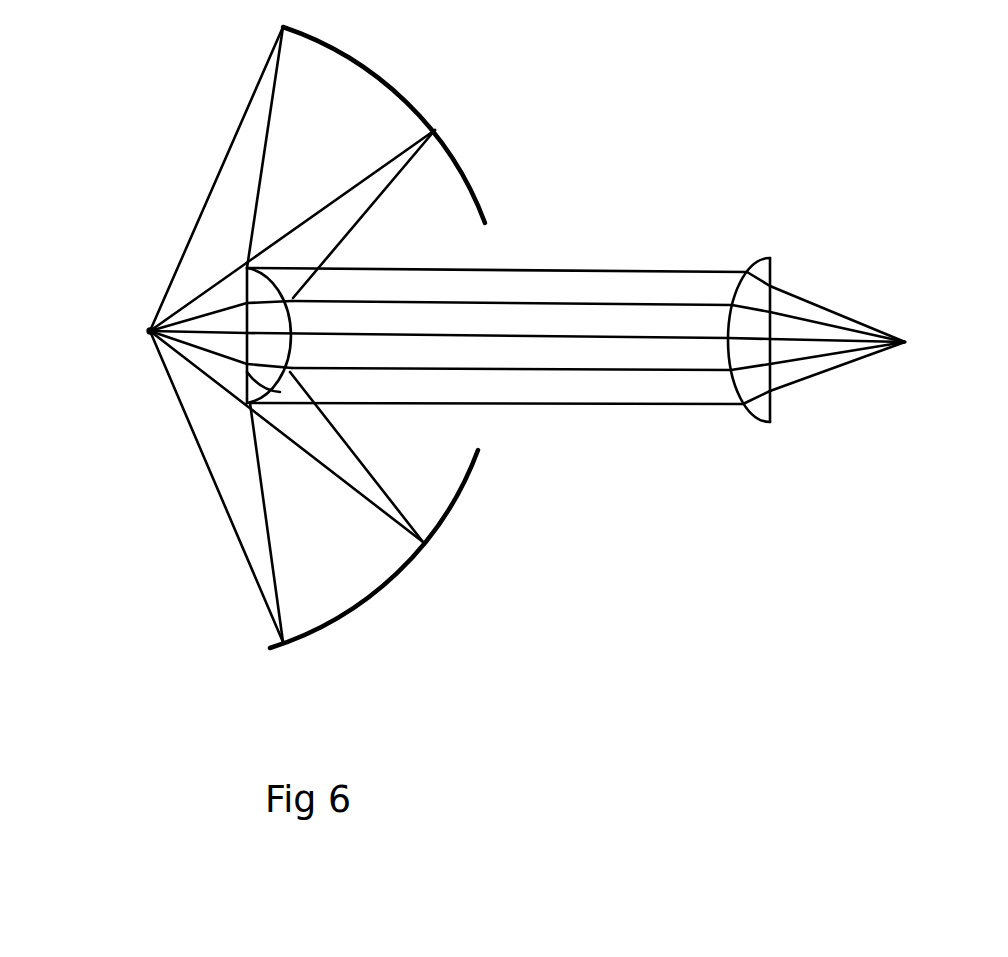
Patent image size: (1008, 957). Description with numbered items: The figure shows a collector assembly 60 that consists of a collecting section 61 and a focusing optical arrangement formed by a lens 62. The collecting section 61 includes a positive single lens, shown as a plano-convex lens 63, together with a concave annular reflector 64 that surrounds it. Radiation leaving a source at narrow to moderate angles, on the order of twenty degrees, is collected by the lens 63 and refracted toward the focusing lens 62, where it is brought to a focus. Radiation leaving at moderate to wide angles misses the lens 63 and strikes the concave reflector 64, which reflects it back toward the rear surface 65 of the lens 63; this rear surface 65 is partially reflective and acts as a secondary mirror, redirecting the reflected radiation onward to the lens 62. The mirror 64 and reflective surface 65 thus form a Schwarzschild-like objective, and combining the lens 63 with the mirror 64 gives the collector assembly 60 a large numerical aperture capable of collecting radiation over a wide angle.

The collector assembly 60 is at (582, 127).
The collecting section 61 is at (137, 290).
The focusing lens 62 is at (767, 252).
The plano-convex lens 63 is at (263, 293).
The concave annular reflector 64 is at (408, 80).
The rear surface 65 is at (282, 388).